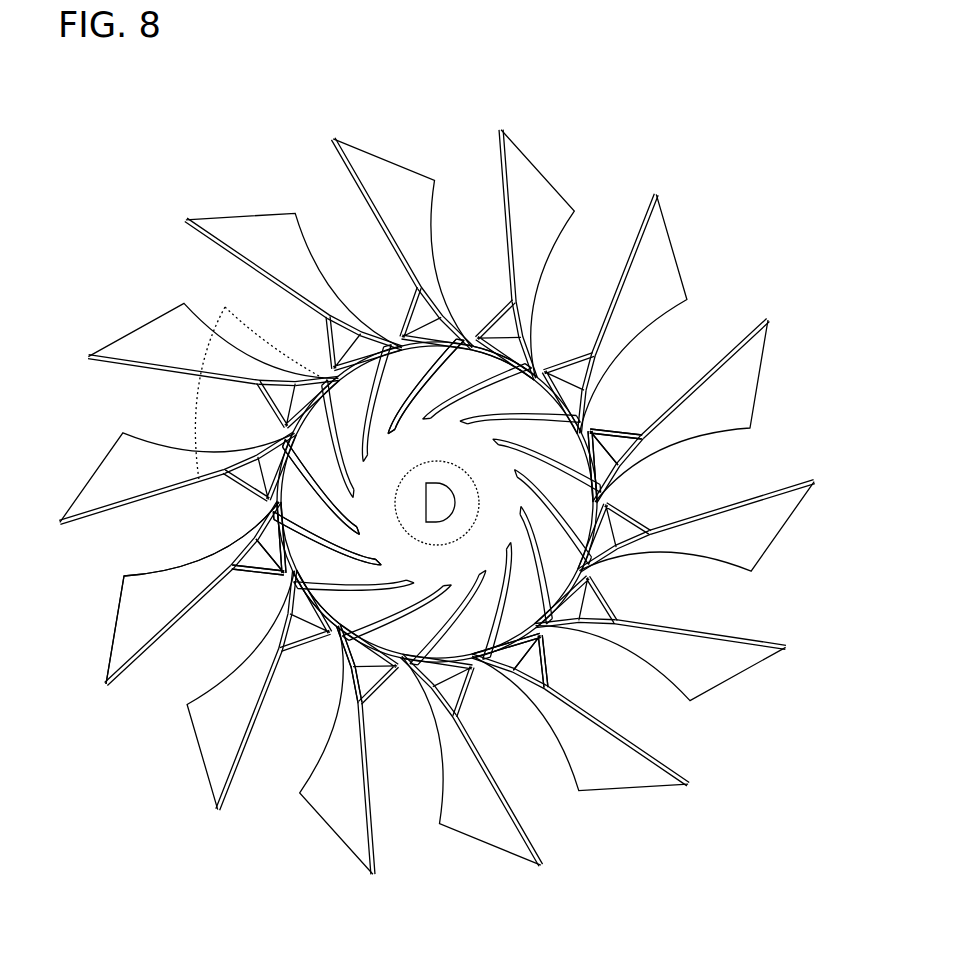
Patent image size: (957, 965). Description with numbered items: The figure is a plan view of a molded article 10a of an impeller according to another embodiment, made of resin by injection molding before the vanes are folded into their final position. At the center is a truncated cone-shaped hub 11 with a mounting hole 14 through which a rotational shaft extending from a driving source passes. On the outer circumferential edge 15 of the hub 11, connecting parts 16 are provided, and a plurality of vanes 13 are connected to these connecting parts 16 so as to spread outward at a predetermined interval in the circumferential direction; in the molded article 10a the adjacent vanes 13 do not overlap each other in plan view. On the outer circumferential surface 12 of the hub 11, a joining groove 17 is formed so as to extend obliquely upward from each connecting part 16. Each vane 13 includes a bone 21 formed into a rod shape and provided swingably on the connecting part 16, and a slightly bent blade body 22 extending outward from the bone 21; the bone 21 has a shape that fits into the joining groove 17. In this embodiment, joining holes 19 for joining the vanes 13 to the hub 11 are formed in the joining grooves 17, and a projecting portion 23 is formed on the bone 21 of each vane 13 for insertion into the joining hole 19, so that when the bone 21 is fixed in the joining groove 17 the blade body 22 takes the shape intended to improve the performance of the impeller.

The molded article 10a is at (180, 144).
The hub 11 is at (424, 360).
The outer circumferential surface 12 is at (491, 364).
The vane 13 is at (53, 548).
The mounting hole 14 is at (442, 510).
The outer circumferential edge 15 is at (593, 453).
The connecting part 16 is at (330, 607).
The joining groove 17 is at (500, 640).
The joining hole 19 is at (385, 577).
The bone 21 is at (285, 574).
The blade body 22 is at (144, 626).
The projecting portion 23 is at (262, 381).